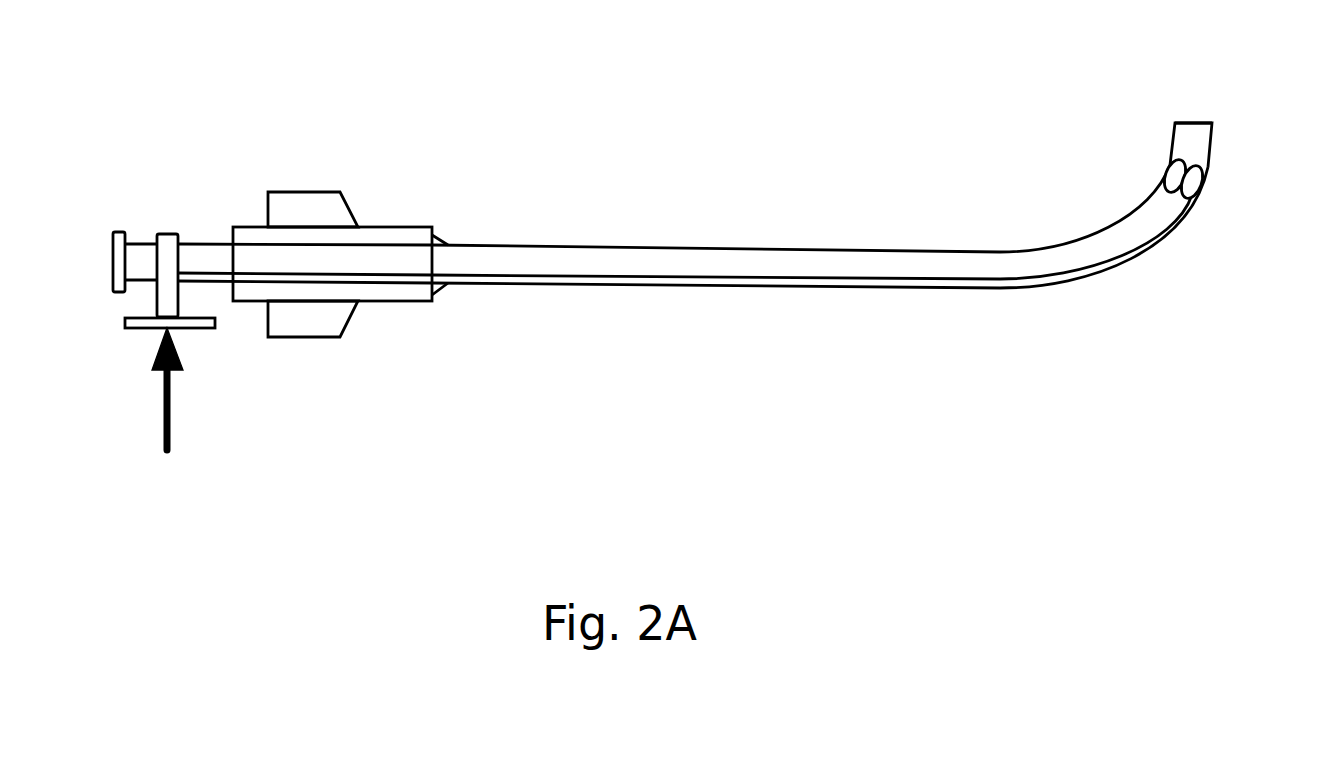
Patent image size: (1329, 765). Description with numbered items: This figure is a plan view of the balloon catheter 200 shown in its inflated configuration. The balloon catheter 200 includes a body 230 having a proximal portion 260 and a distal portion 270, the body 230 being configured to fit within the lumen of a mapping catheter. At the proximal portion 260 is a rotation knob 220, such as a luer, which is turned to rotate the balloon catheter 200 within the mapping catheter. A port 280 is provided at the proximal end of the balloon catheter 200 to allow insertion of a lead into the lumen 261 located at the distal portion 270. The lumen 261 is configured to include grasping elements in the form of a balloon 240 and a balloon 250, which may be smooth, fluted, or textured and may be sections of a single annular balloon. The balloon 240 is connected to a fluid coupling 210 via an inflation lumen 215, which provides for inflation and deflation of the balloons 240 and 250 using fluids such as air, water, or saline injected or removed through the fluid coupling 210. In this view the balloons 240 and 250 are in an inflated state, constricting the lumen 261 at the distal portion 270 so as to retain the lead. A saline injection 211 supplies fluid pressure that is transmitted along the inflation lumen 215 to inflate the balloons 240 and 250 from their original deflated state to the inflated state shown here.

The balloon catheter 200 is at (343, 129).
The fluid coupling 210 is at (123, 317).
The saline injection 211 is at (162, 393).
The inflation lumen 215 is at (972, 285).
The rotation knob 220 is at (399, 226).
The body 230 is at (805, 262).
The balloon 240 is at (1203, 183).
The balloon 250 is at (1173, 172).
The proximal portion 260 is at (232, 181).
The lumen 261 is at (1203, 123).
The distal portion 270 is at (1059, 197).
The port 280 is at (112, 248).